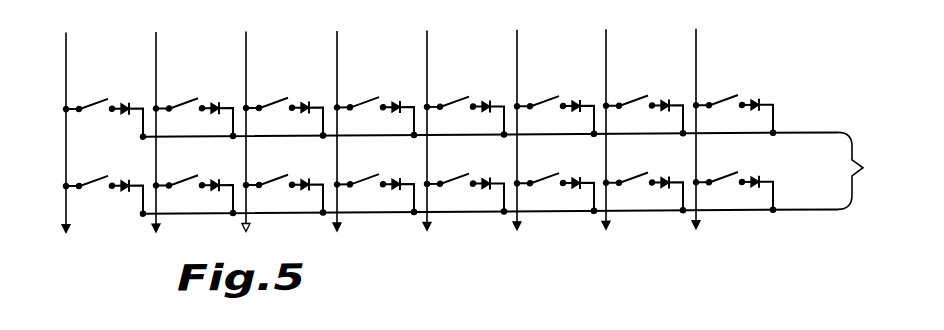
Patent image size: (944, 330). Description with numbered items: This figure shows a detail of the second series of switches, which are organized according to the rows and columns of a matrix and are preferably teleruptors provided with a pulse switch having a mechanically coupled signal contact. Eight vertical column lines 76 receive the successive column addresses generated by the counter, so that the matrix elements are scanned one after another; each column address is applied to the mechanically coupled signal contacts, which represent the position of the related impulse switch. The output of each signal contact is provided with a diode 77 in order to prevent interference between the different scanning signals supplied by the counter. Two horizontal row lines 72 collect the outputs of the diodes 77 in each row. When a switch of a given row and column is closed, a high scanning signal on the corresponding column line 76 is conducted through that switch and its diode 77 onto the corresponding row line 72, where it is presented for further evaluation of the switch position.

The column lines 76 is at (719, 58).
The diode 77 is at (134, 89).
The row lines 72 is at (517, 159).